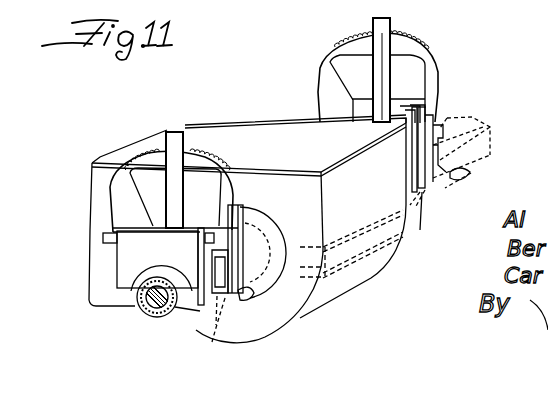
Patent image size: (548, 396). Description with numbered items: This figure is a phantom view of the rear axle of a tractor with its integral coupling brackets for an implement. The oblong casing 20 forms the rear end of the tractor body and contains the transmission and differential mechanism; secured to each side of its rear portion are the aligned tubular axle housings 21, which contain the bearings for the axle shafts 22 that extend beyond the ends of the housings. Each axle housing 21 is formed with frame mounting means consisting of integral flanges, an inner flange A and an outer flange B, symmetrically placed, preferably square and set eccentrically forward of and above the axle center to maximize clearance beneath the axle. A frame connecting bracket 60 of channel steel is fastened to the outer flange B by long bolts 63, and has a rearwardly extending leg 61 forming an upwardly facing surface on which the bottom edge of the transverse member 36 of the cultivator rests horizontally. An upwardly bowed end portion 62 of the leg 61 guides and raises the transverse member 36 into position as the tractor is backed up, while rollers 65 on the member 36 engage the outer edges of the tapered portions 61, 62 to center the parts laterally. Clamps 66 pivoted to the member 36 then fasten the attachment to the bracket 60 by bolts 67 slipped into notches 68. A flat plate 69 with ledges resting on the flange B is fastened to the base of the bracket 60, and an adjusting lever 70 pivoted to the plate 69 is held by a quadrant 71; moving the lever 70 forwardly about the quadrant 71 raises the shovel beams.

The oblong casing 20 is at (95, 193).
The tubular axle housing 21 is at (135, 301).
The axle shaft 22 is at (140, 306).
The transverse member 36 is at (259, 275).
The frame connecting bracket 60 is at (205, 308).
The rearwardly extending leg 61 is at (230, 300).
The upwardly bowed end portion 62 is at (243, 303).
The long bolt 63 is at (104, 236).
The roller 65 is at (212, 342).
The clamp 66 is at (268, 225).
The bolt 67 is at (275, 233).
The notch 68 is at (213, 258).
The flat plate 69 is at (131, 200).
The adjusting lever 70 is at (173, 133).
The quadrant 71 is at (213, 170).
The outer flange B is at (128, 262).
The inner flange A is at (230, 212).